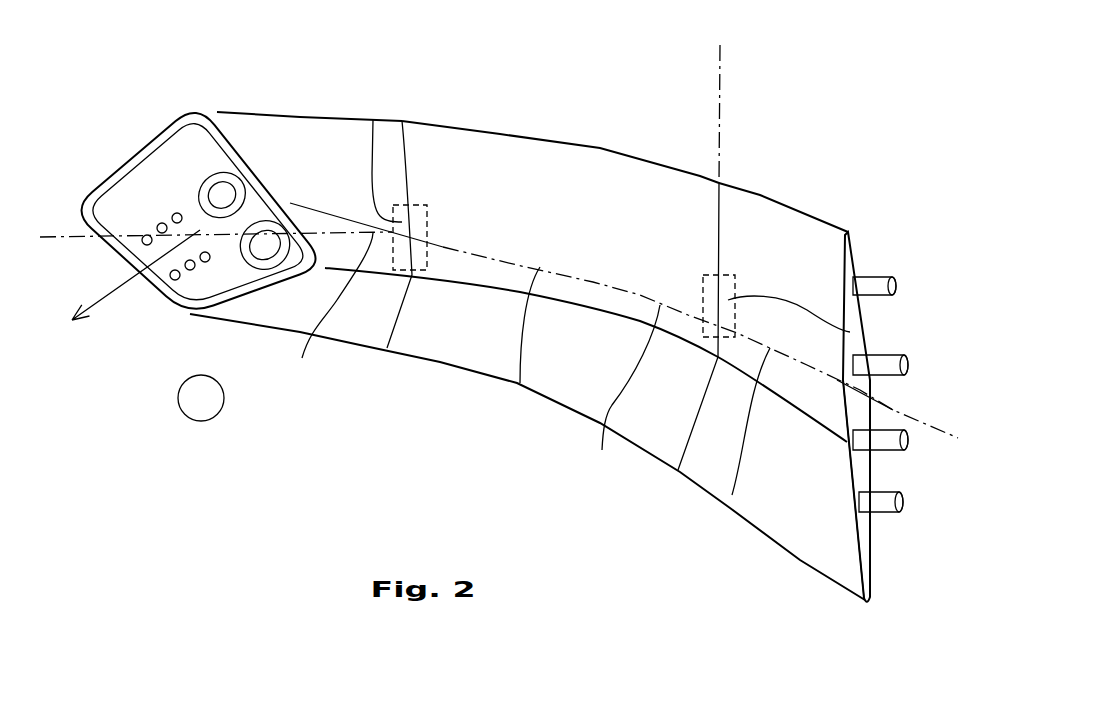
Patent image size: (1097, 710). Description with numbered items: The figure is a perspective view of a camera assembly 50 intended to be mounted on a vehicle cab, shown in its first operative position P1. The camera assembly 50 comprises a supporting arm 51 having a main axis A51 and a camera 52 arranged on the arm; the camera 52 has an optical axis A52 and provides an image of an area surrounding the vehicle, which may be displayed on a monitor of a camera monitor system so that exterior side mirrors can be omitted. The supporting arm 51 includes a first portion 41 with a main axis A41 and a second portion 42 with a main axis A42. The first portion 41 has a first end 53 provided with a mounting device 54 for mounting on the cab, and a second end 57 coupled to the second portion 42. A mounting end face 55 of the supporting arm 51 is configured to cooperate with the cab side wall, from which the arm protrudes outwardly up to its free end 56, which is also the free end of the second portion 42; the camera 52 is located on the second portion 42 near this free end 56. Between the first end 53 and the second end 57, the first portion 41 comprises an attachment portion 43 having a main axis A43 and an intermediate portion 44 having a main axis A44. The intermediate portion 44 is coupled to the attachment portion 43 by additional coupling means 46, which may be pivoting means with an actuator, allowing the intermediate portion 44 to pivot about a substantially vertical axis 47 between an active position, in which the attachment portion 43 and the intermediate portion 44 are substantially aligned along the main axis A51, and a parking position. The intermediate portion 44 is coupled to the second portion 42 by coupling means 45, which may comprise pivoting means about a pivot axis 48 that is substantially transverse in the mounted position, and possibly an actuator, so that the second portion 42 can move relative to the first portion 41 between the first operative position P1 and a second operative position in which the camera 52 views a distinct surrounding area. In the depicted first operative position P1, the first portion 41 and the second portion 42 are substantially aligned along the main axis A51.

The first portion 41 is at (848, 175).
The second portion 42 is at (317, 137).
The attachment portion 43 is at (777, 238).
The intermediate portion 44 is at (500, 162).
The coupling means 45 is at (373, 120).
The additional coupling means 46 is at (850, 332).
The substantially vertical axis 47 is at (720, 77).
The pivot axis 48 is at (292, 202).
The camera assembly 50 is at (258, 470).
The supporting arm 51 is at (543, 425).
The camera 52 is at (207, 197).
The first end 53 is at (838, 223).
The mounting device 54 is at (880, 502).
The mounting end face 55 is at (865, 543).
The free end 56 is at (175, 145).
The second end 57 is at (420, 147).
The main axis of the first portion A41 is at (520, 383).
The main axis of the second portion A42 is at (216, 309).
The main axis of the attachment portion A43 is at (732, 495).
The main axis of the intermediate portion A44 is at (621, 393).
The main axis of the supporting arm A51 is at (940, 430).
The optical axis A52 is at (110, 297).
The first operative position P1 is at (201, 398).